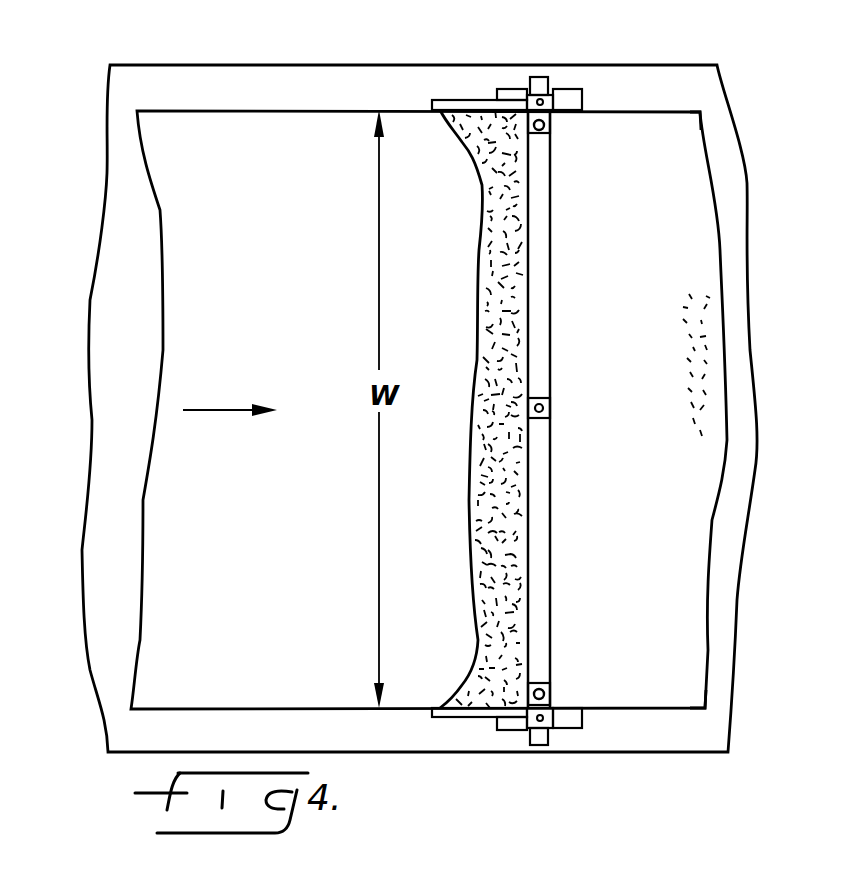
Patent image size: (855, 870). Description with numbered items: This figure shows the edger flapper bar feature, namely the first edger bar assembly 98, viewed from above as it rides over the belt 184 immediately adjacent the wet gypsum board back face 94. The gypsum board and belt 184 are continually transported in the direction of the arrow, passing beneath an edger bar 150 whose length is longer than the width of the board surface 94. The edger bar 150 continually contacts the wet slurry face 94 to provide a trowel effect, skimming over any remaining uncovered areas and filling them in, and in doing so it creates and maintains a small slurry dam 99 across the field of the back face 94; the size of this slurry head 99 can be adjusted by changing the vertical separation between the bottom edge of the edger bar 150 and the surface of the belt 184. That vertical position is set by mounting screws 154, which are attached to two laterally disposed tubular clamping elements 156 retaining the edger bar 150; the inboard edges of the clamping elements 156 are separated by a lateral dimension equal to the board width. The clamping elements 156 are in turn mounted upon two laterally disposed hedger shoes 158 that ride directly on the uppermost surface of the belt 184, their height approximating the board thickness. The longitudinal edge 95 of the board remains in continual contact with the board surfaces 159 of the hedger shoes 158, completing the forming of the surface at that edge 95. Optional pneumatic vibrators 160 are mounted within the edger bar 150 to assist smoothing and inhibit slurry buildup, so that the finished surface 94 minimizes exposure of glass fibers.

The gypsum board back face 94 is at (180, 340).
The longitudinal edge 95 is at (694, 105).
The first edger bar assembly 98 is at (535, 375).
The slurry dam 99 is at (477, 440).
The edger bar 150 is at (547, 523).
The mounting screws 154 is at (543, 77).
The tubular clamping elements 156 is at (560, 98).
The hedger shoes 158 is at (575, 97).
The board surfaces of the hedger shoes 159 is at (565, 110).
The pneumatic vibrators 160 is at (546, 128).
The belt 184 is at (97, 498).